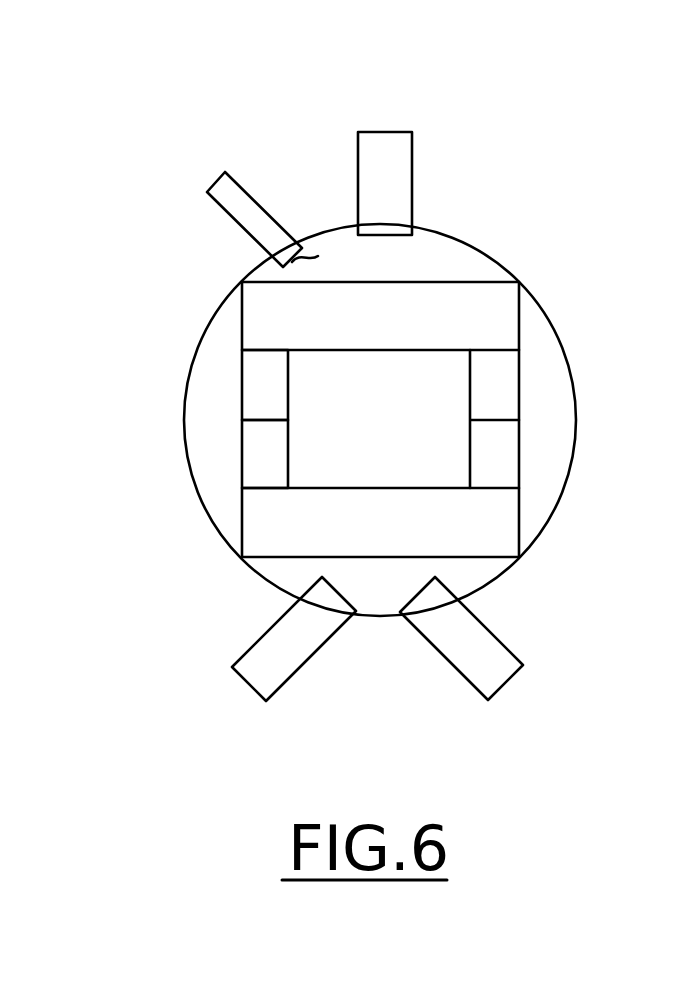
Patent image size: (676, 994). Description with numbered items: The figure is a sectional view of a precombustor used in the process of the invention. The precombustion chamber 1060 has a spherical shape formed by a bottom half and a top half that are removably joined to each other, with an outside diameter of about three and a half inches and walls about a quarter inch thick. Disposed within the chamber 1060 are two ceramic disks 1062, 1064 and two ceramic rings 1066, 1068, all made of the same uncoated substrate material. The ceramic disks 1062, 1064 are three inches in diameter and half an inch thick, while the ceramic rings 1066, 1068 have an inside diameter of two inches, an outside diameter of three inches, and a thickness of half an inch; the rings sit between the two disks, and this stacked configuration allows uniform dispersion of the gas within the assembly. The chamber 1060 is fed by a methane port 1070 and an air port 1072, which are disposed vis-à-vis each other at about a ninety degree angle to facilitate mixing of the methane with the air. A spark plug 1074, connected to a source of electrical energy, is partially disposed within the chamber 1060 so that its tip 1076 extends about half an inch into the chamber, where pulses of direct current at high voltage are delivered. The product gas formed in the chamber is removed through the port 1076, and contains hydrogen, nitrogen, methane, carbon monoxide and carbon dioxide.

The precombustion chamber 1060 is at (515, 238).
The ceramic disk 1062 is at (273, 313).
The ceramic disk 1064 is at (258, 517).
The ceramic ring 1066 is at (278, 386).
The ceramic ring 1068 is at (258, 443).
The methane port 1070 is at (258, 639).
The air port 1072 is at (483, 625).
The spark plug 1074 is at (233, 215).
The spark plug tip 1076 is at (390, 135).